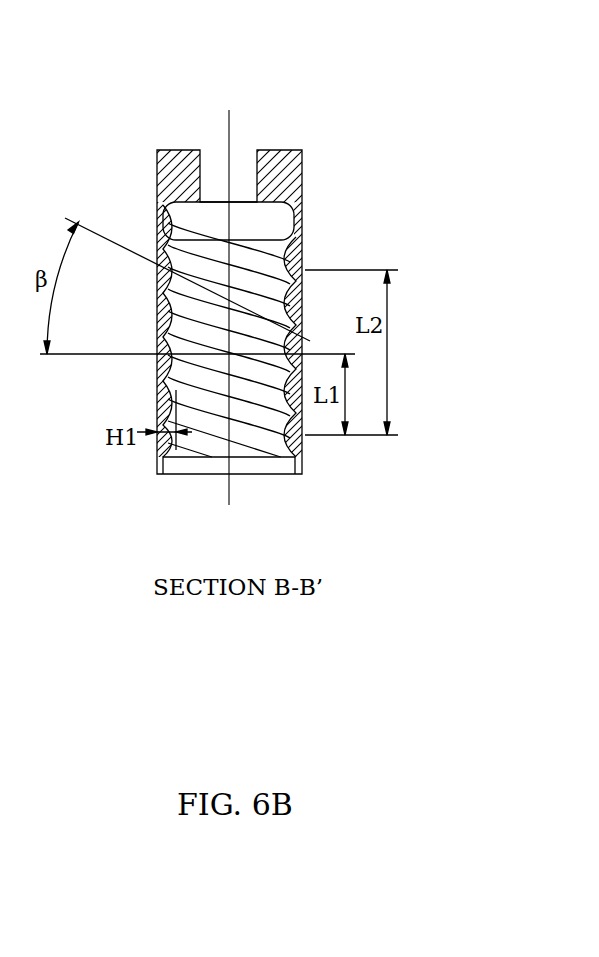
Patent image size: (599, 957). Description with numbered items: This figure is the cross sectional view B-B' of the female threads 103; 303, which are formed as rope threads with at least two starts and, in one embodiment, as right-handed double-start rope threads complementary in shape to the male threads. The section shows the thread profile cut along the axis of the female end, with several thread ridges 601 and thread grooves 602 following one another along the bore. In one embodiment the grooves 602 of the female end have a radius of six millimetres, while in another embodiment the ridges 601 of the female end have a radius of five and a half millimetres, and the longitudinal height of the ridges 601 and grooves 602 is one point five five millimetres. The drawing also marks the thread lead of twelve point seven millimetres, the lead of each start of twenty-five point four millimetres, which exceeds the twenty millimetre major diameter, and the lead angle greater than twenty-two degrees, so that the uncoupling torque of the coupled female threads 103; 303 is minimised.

The female threads 103 is at (299, 256).
The female threads 303 is at (311, 104).
The thread ridges 601 is at (160, 390).
The thread grooves 602 is at (162, 263).